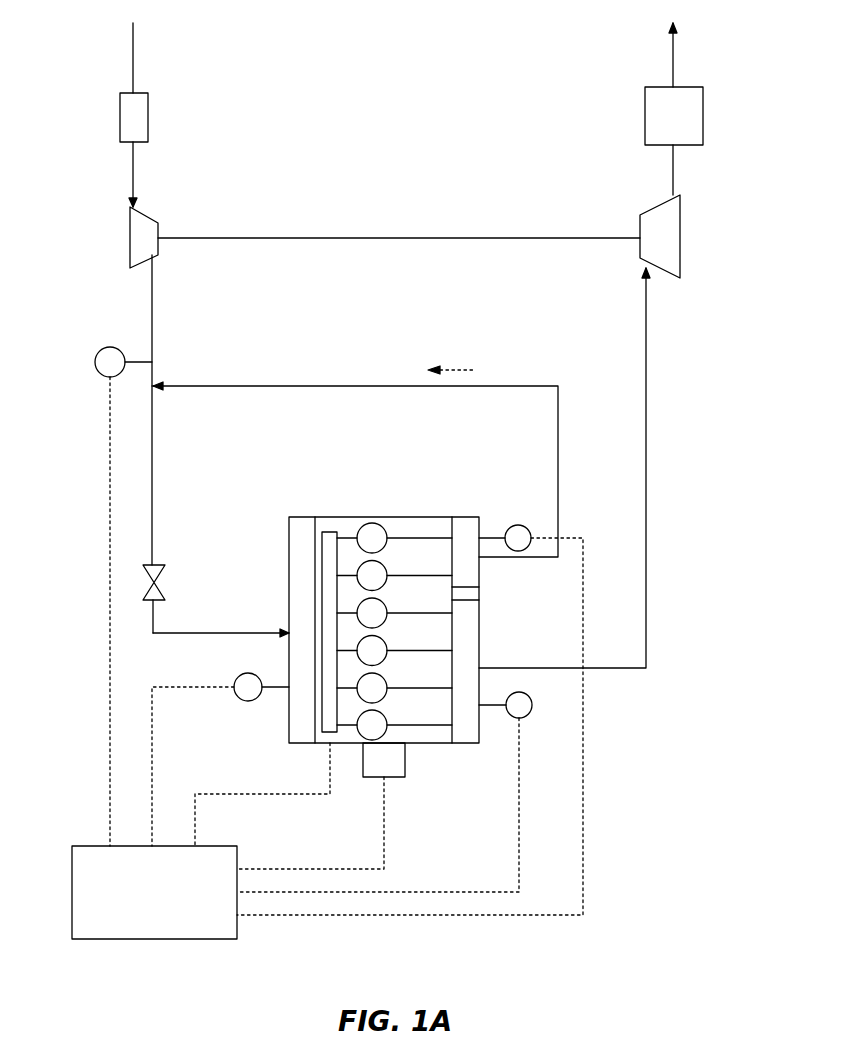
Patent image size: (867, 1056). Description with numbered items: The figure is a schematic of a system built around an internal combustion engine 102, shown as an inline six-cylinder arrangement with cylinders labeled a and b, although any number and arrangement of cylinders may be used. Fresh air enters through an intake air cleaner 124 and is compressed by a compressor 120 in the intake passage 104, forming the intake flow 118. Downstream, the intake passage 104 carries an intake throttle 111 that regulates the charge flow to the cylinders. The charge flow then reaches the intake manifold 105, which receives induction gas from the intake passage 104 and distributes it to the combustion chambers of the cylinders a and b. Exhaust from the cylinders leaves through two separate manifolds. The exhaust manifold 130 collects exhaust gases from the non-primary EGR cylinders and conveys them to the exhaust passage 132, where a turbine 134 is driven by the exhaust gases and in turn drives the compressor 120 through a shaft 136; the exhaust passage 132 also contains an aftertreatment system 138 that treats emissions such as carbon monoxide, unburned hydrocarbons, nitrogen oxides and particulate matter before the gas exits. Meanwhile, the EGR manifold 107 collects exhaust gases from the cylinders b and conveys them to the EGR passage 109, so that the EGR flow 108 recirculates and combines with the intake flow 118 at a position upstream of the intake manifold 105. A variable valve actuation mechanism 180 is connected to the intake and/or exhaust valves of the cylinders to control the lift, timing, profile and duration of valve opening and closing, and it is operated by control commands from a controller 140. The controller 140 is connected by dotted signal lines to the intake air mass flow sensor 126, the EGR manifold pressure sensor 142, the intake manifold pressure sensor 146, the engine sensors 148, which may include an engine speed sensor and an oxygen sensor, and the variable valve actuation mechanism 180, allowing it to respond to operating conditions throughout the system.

The engine 102 is at (383, 507).
The intake passage 104 is at (153, 482).
The intake manifold 105 is at (293, 722).
The EGR manifold 107 is at (465, 527).
The EGR flow 108 is at (464, 370).
The EGR passage 109 is at (356, 385).
The intake throttle 111 is at (143, 578).
The intake flow 118 is at (156, 312).
The compressor 120 is at (128, 238).
The intake air cleaner 124 is at (120, 118).
The intake air mass flow sensor 126 is at (95, 358).
The exhaust manifold 130 is at (465, 735).
The exhaust passage 132 is at (646, 465).
The turbine 134 is at (683, 233).
The shaft 136 is at (398, 237).
The aftertreatment system 138 is at (705, 112).
The controller 140 is at (175, 904).
The EGR manifold pressure sensor 142 is at (516, 524).
The intake manifold pressure sensor 146 is at (245, 672).
The engine sensors 148 is at (395, 777).
The variable valve actuation mechanism 180 is at (328, 522).